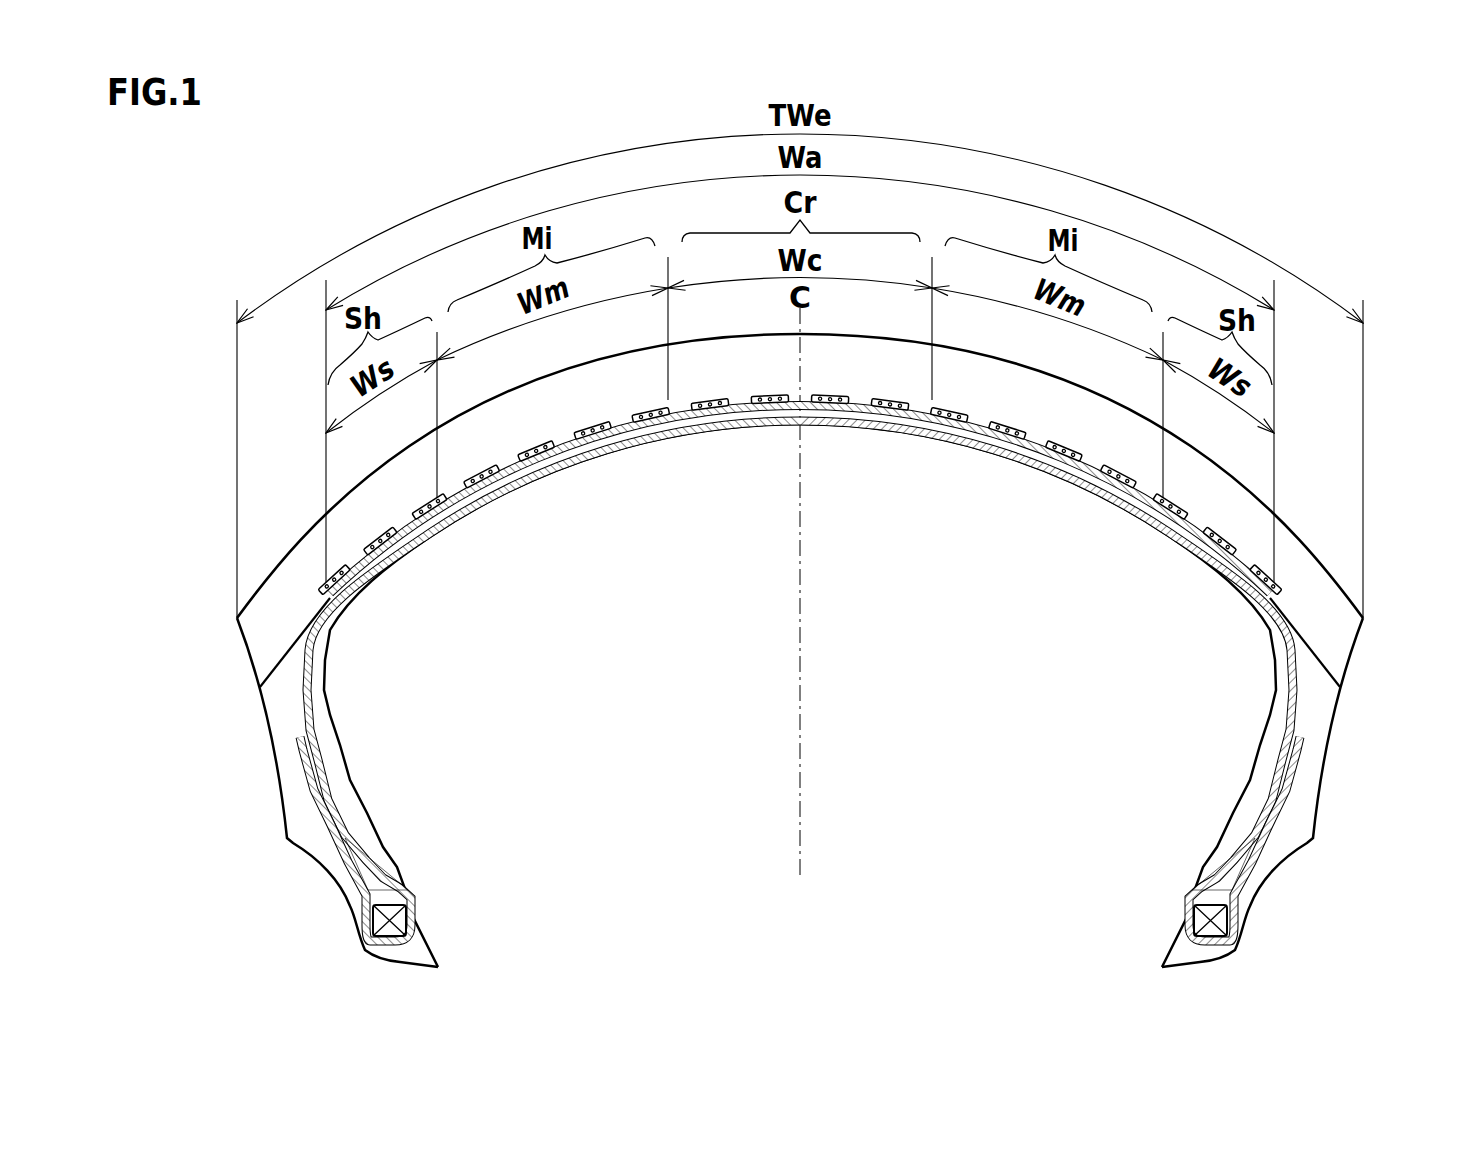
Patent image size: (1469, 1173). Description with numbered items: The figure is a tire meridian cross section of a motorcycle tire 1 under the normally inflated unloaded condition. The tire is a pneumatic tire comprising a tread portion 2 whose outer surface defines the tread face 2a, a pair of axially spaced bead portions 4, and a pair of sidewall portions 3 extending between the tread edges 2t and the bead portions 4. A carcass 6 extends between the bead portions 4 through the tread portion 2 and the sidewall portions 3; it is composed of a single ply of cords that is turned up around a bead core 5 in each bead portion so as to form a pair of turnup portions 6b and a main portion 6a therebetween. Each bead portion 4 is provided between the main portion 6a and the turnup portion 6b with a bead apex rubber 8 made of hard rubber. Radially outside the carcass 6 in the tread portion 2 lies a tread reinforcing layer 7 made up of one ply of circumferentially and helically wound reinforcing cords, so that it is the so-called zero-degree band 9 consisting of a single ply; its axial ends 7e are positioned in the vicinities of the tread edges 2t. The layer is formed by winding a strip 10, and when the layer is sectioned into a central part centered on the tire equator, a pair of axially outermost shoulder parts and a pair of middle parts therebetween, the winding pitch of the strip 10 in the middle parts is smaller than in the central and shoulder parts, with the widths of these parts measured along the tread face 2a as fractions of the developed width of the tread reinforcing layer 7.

The motorcycle tire 1 is at (1393, 190).
The tread portion 2 is at (837, 382).
The tread face 2a is at (1310, 545).
The tread edges 2t is at (237, 618).
The sidewall portions 3 is at (255, 747).
The bead portions 4 is at (338, 913).
The bead core 5 is at (412, 916).
The carcass 6 is at (800, 681).
The main portion 6a is at (1293, 690).
The turnup portions 6b is at (1290, 757).
The tread reinforcing layer 7 is at (799, 567).
The axial ends 7e is at (333, 587).
The bead apex rubber 8 is at (360, 860).
The zero-degree band 9 is at (1178, 522).
The strip 10 is at (603, 427).